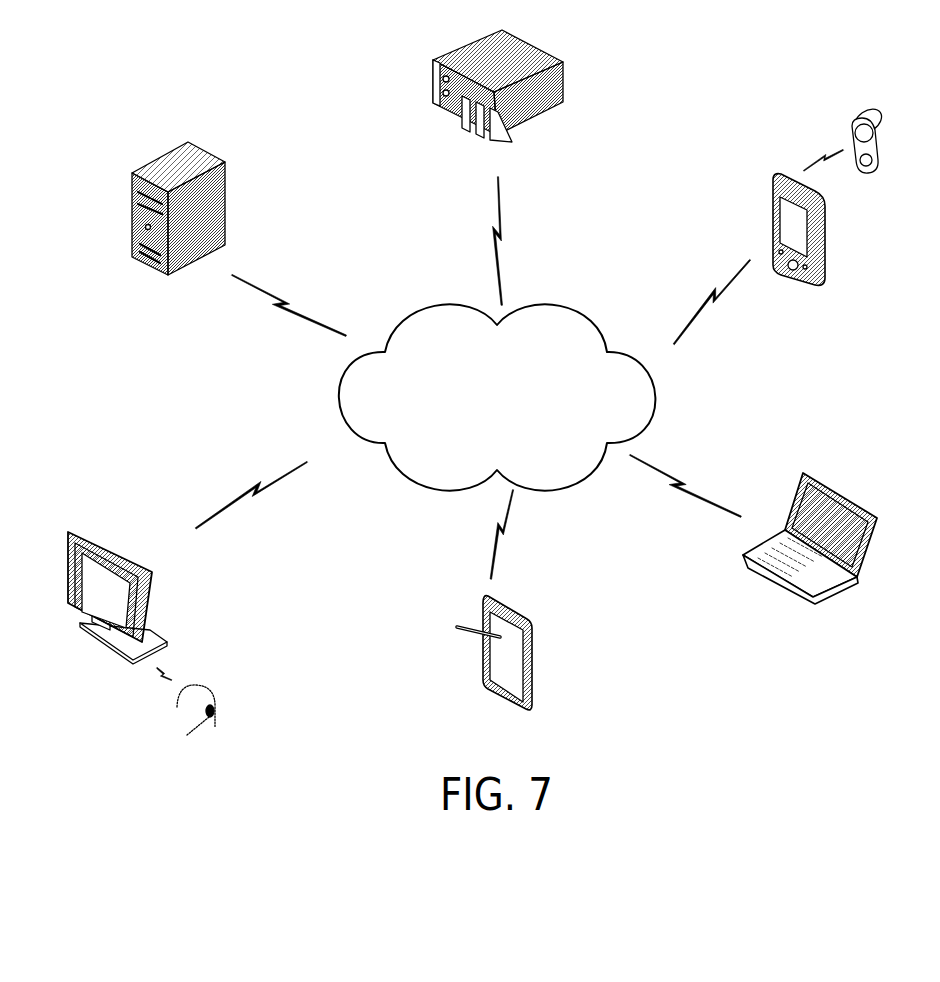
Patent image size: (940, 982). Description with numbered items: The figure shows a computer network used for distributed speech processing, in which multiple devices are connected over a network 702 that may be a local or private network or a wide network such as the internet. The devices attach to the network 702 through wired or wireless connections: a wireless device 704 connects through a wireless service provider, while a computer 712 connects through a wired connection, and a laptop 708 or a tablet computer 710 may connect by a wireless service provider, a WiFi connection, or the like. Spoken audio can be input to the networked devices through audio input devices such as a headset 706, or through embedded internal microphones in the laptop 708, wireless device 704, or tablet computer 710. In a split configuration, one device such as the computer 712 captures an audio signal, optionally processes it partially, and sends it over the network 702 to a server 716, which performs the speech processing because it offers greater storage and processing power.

The network 702 is at (543, 305).
The wireless device 704 is at (827, 217).
The headset 706 is at (870, 105).
The laptop 708 is at (818, 475).
The tablet computer 710 is at (528, 620).
The computer 712 is at (117, 547).
The server 716 is at (563, 55).